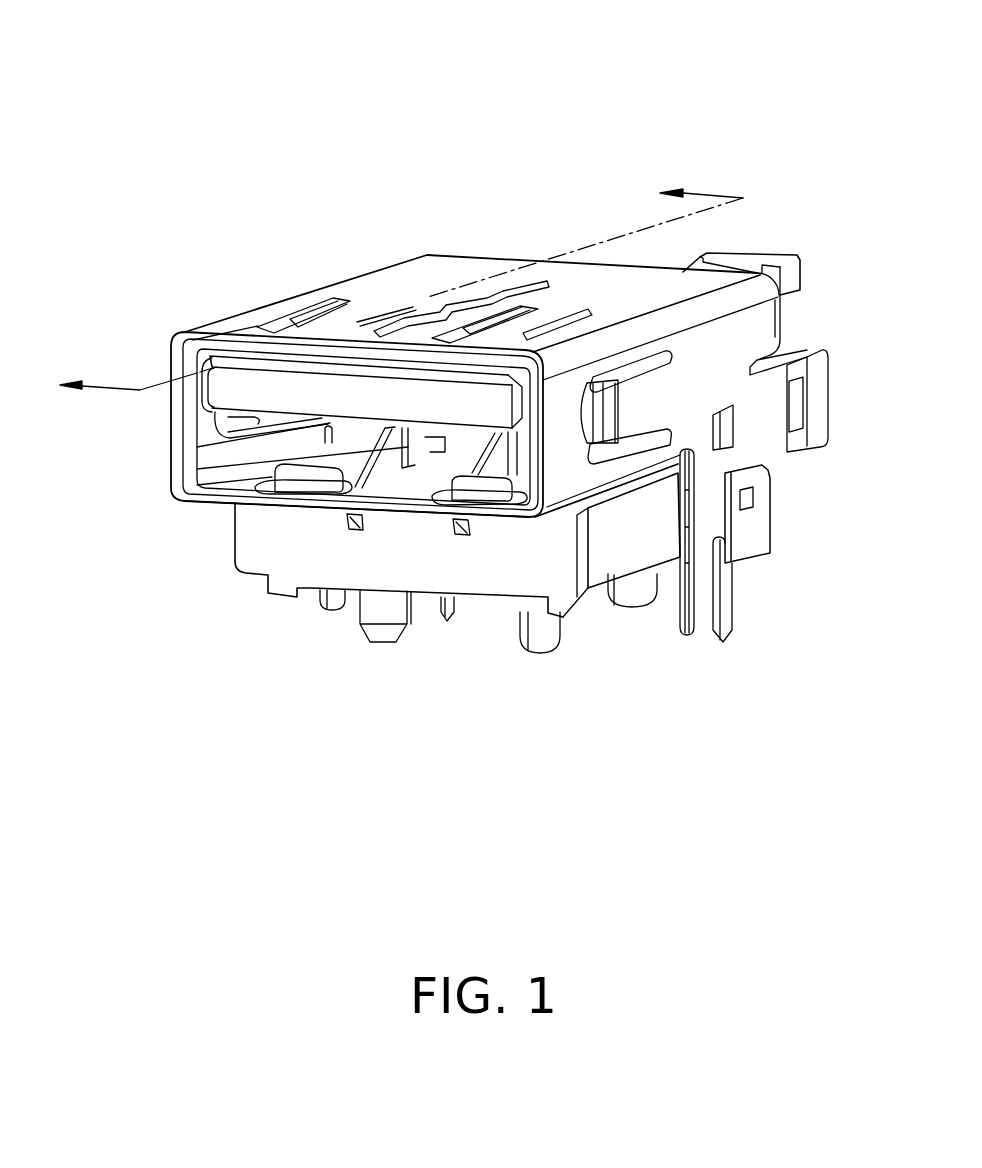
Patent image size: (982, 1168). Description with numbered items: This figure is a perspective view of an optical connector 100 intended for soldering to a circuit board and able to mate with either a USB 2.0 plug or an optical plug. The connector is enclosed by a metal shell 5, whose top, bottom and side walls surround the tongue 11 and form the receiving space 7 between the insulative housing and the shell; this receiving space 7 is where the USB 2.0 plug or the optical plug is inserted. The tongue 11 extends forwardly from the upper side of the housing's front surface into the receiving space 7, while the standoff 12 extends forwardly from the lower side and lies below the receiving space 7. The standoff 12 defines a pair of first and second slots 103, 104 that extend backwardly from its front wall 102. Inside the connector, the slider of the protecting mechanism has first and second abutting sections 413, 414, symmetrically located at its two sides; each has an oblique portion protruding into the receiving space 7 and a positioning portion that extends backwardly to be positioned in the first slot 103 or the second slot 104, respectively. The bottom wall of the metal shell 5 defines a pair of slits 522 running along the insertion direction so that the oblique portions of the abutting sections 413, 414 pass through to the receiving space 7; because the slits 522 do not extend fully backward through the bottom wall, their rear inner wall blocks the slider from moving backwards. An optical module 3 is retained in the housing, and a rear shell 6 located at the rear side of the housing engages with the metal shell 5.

The optical connector 100 is at (474, 50).
The metal shell 5 is at (430, 287).
The optical module 3 is at (733, 257).
The tongue 11 is at (240, 387).
The second abutting section 414 is at (317, 430).
The first abutting section 413 is at (500, 447).
The receiving space 7 is at (228, 497).
The second slot 104 is at (347, 522).
The first slot 103 is at (453, 528).
The slits 522 is at (390, 478).
The front wall 102 is at (507, 580).
The standoff 12 is at (617, 543).
The rear shell 6 is at (753, 535).